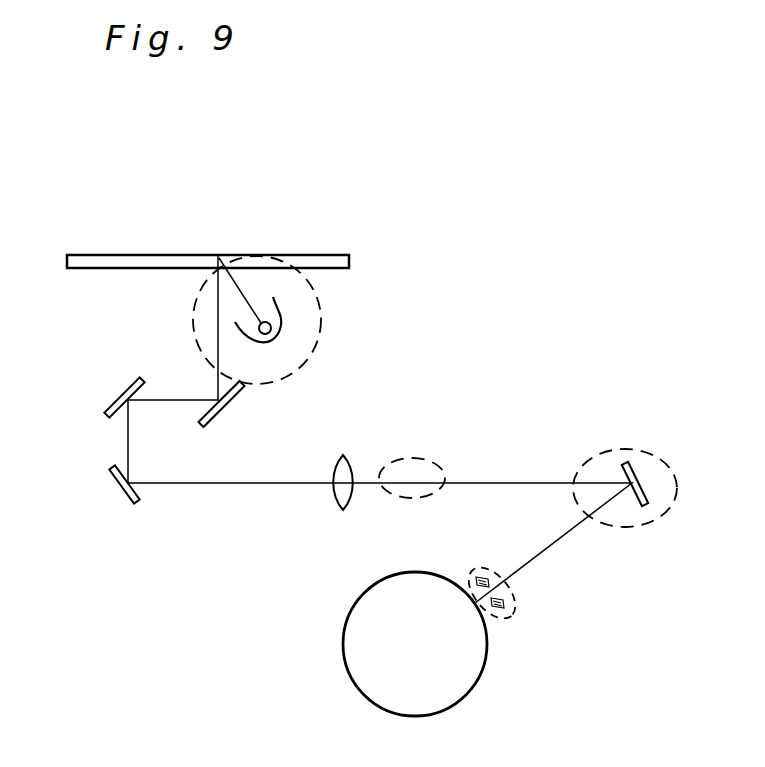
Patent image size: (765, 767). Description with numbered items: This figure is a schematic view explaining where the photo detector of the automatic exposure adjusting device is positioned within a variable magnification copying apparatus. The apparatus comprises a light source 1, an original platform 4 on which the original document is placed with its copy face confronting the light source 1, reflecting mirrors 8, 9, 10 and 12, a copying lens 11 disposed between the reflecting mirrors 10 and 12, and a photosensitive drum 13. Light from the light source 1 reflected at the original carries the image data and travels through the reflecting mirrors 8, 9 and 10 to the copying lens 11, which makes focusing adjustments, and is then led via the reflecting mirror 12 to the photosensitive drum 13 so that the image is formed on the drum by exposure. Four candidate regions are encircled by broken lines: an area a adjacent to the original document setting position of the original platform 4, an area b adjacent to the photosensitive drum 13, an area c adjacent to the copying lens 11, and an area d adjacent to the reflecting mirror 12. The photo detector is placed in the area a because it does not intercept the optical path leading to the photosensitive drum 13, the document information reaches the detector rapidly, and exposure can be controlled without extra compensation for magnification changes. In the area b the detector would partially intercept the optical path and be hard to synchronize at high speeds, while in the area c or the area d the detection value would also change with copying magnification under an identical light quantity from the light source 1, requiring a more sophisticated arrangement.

The light source 1 is at (276, 322).
The original platform 4 is at (332, 256).
The reflecting mirror 8 is at (230, 400).
The reflecting mirror 9 is at (114, 400).
The reflecting mirror 10 is at (115, 480).
The copying lens 11 is at (345, 467).
The reflecting mirror 12 is at (637, 473).
The photosensitive drum 13 is at (463, 682).
The area a is at (322, 336).
The area b is at (512, 600).
The area c is at (443, 462).
The area d is at (680, 482).